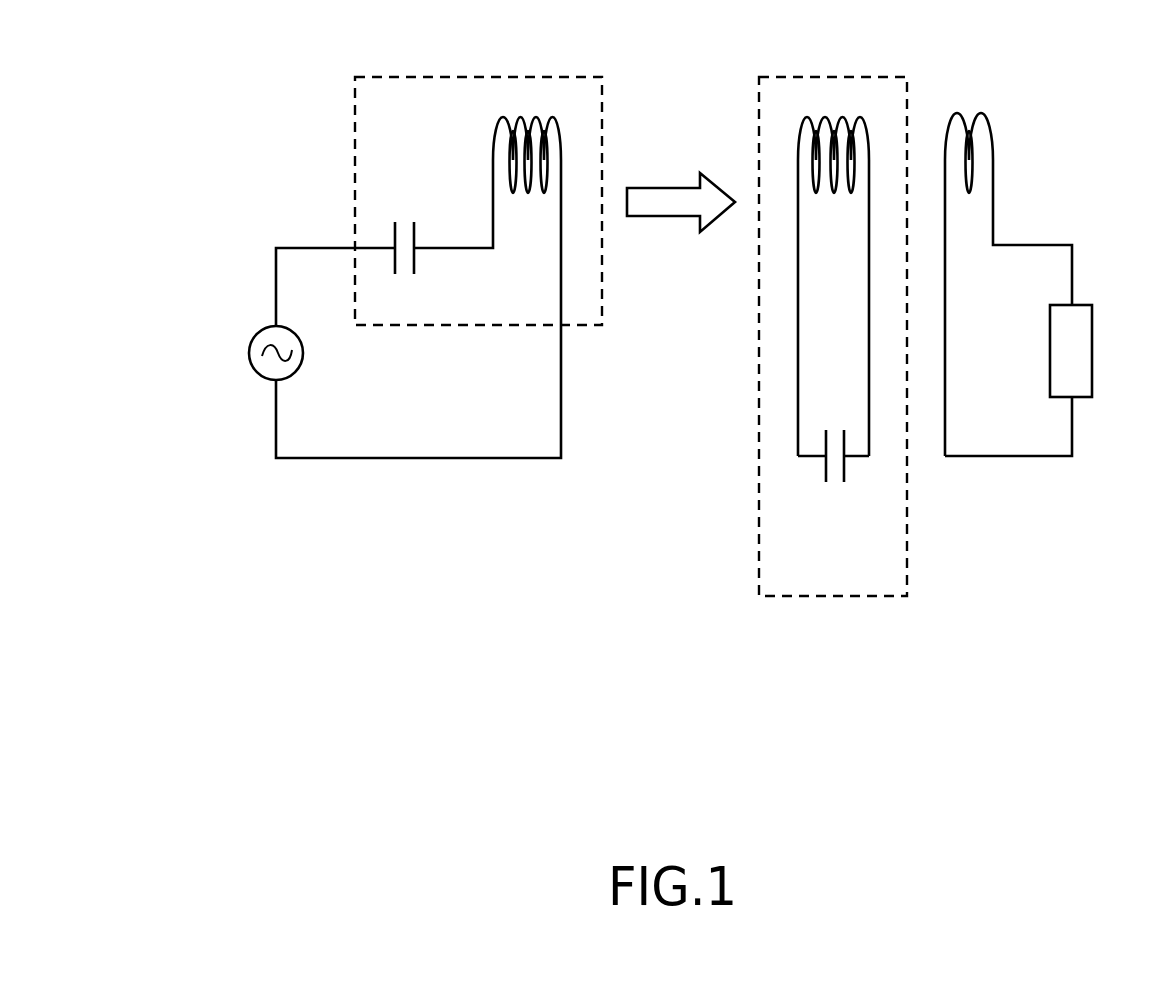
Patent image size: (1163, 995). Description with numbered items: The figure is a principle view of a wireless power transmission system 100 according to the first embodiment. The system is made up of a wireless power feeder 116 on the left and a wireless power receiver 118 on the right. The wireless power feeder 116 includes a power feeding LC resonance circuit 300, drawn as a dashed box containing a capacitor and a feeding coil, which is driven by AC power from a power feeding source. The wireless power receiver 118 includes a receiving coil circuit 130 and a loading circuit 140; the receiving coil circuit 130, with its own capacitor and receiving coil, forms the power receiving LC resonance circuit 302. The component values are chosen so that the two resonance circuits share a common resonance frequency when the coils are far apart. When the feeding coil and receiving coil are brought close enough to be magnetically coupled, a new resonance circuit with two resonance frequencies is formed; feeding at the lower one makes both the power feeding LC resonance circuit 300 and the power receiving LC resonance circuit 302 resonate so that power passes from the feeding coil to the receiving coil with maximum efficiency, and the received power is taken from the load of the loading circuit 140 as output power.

The wireless power transmission system 100 is at (668, 393).
The wireless power feeder 116 is at (401, 282).
The wireless power receiver 118 is at (948, 343).
The receiving coil circuit 130 is at (878, 482).
The loading circuit 140 is at (1040, 336).
The power feeding LC resonance circuit 300 is at (478, 77).
The power receiving LC resonance circuit 302 is at (833, 77).